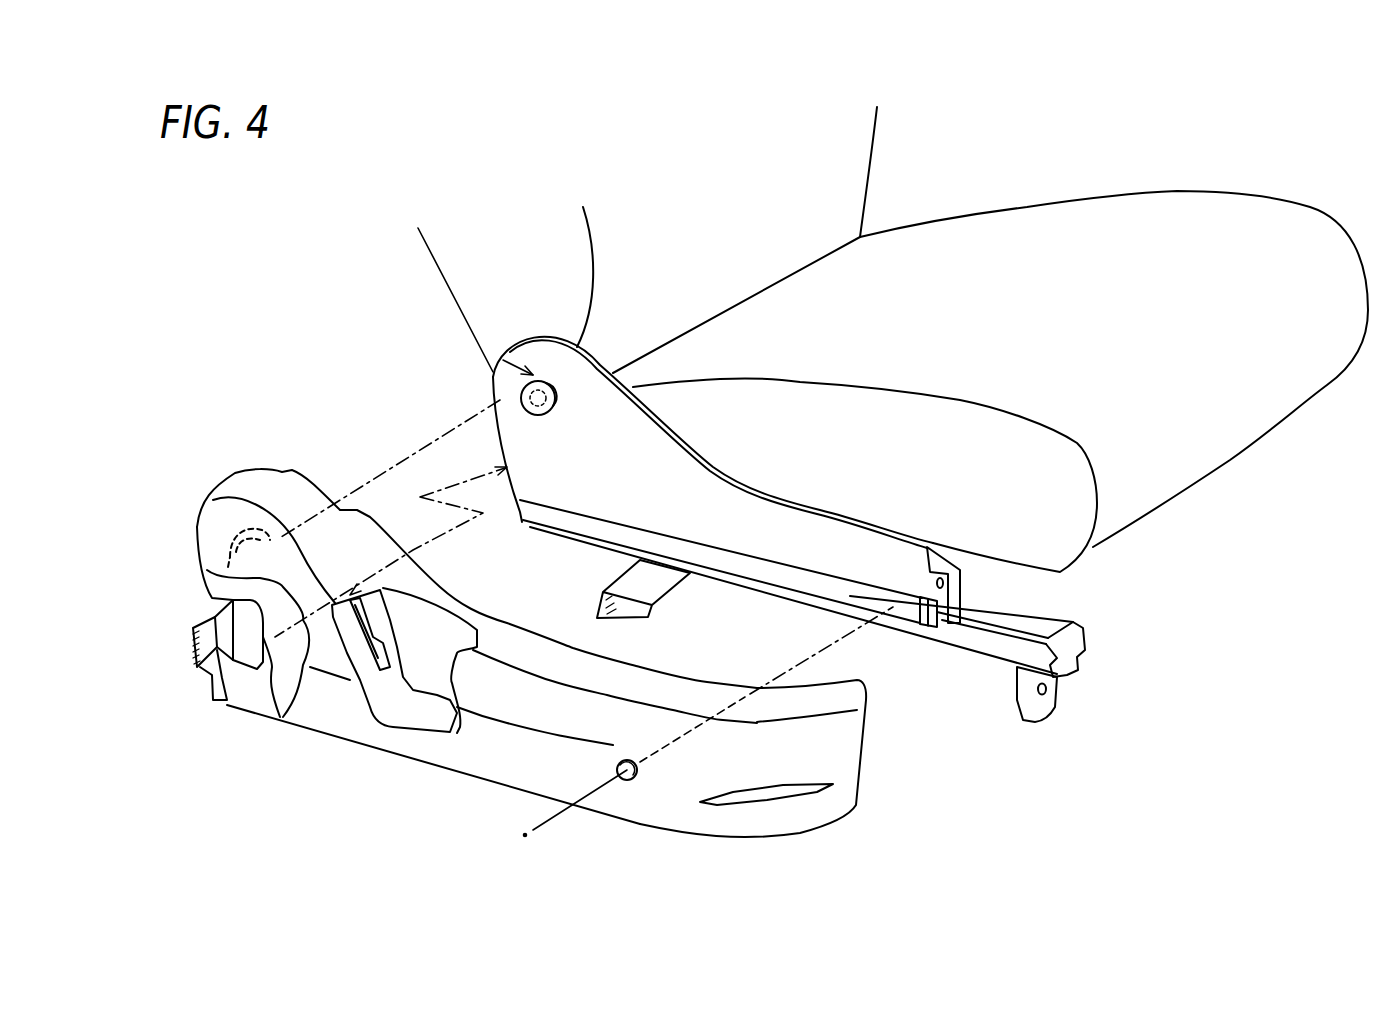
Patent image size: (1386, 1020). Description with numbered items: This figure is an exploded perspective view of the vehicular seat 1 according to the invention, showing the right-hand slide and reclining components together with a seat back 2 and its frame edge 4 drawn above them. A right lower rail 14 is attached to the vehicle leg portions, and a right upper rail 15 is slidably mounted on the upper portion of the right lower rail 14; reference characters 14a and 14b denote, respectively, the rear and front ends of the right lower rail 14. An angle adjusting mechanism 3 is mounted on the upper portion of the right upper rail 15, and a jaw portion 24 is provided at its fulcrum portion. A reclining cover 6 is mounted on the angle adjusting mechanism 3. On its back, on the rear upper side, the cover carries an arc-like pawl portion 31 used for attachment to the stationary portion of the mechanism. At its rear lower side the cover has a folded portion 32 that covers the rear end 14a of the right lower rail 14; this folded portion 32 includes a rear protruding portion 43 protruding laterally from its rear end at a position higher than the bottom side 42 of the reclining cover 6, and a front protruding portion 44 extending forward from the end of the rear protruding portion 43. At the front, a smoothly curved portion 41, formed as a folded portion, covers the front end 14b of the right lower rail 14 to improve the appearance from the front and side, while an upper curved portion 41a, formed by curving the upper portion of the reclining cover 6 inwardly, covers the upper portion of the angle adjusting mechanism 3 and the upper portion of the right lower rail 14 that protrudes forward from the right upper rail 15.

The seat 1 is at (1168, 148).
The seat back 2 is at (1290, 203).
The angle adjusting mechanism 3 is at (527, 338).
The seat back frame 4 is at (878, 137).
The reclining cover 6 is at (437, 775).
The right lower rail 14 is at (952, 647).
The rear end of the right lower rail 14a is at (523, 527).
The front end of the right lower rail 14b is at (1088, 640).
The right upper rail 15 is at (767, 567).
The jaw portion 24 is at (543, 378).
The arc-like pawl portion 31 is at (225, 535).
The folded portion 32 is at (220, 707).
The curved portion 41 is at (822, 825).
The upper curved portion 41a is at (723, 693).
The bottom side 42 is at (497, 785).
The rear protruding portion 43 is at (197, 630).
The front protruding portion 44 is at (285, 660).